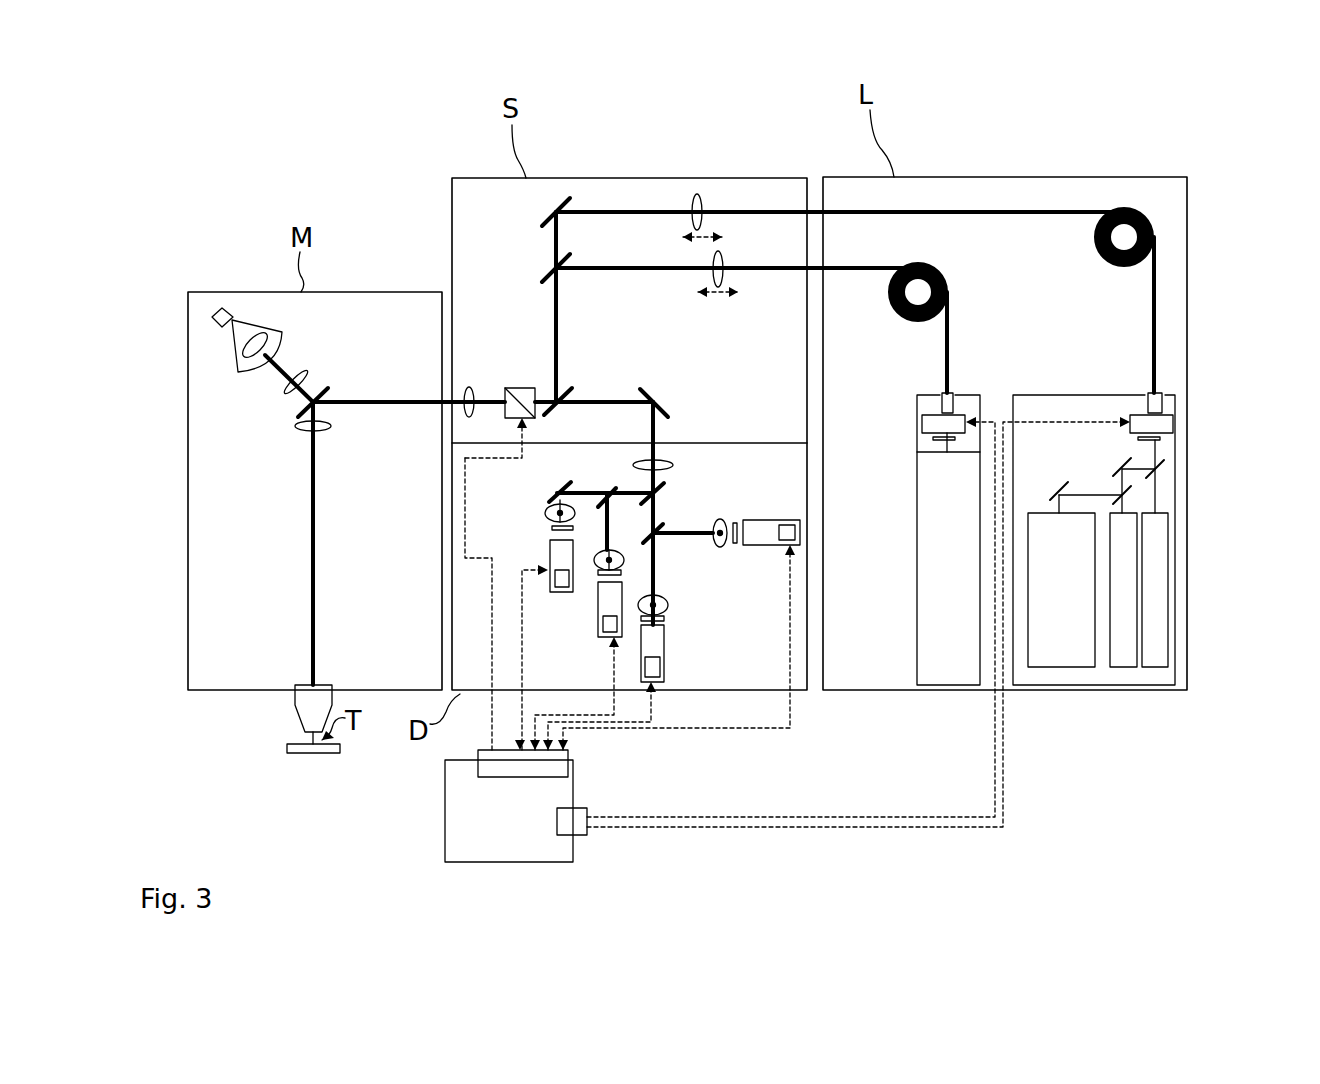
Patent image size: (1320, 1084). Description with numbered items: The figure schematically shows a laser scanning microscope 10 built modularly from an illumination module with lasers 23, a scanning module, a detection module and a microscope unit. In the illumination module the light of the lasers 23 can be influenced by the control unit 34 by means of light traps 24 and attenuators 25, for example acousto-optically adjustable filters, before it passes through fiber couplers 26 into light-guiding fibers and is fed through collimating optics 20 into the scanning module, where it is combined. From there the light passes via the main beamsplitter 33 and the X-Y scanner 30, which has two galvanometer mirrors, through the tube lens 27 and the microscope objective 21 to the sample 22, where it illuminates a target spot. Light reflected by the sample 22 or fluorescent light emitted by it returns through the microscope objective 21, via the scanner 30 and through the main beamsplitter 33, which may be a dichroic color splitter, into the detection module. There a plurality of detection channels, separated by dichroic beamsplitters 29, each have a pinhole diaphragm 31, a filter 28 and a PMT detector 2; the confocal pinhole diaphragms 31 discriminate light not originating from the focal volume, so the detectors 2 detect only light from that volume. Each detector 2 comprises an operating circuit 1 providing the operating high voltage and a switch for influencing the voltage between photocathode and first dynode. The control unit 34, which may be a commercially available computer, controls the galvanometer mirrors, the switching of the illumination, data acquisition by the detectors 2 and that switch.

The laser scanning microscope 10 is at (198, 120).
The operating circuit 1 is at (555, 578).
The PMT detector 2 is at (597, 633).
The collimating optics 20 is at (718, 253).
The microscope objective 21 is at (295, 705).
The sample 22 is at (300, 754).
The laser 23 is at (945, 632).
The light trap 24 is at (935, 440).
The attenuator 25 is at (922, 423).
The fiber coupler 26 is at (942, 400).
The tube lens 27 is at (295, 427).
The filter 28 is at (598, 573).
The dichroic beamsplitter 29 is at (657, 487).
The scanner 30 is at (520, 388).
The pinhole diaphragm 31 is at (546, 512).
The main beamsplitter 33 is at (572, 395).
The control unit 34 is at (516, 806).